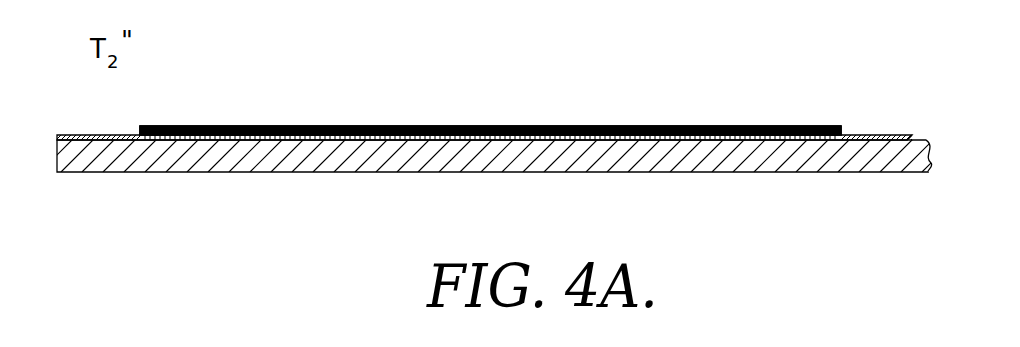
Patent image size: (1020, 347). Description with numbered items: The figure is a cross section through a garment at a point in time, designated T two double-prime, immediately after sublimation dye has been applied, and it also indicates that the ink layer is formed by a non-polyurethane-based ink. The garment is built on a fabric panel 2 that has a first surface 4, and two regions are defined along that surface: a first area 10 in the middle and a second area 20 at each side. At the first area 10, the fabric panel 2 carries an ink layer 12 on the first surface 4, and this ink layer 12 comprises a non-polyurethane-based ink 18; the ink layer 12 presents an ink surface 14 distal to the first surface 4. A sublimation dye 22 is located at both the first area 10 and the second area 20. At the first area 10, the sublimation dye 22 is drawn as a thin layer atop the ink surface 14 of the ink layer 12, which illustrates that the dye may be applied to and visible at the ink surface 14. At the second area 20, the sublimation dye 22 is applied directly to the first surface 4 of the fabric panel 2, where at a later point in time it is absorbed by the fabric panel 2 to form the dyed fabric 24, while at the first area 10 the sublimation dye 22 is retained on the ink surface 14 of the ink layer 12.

The fabric panel 2 is at (52, 142).
The first surface 4 is at (61, 134).
The first area 10 is at (841, 183).
The ink layer 12 is at (788, 127).
The ink surface 14 is at (678, 127).
The non-polyurethane-based ink 18 is at (292, 127).
The second area 20 is at (138, 183).
The sublimation dye 22 is at (124, 136).
The dyed fabric 24 is at (914, 154).